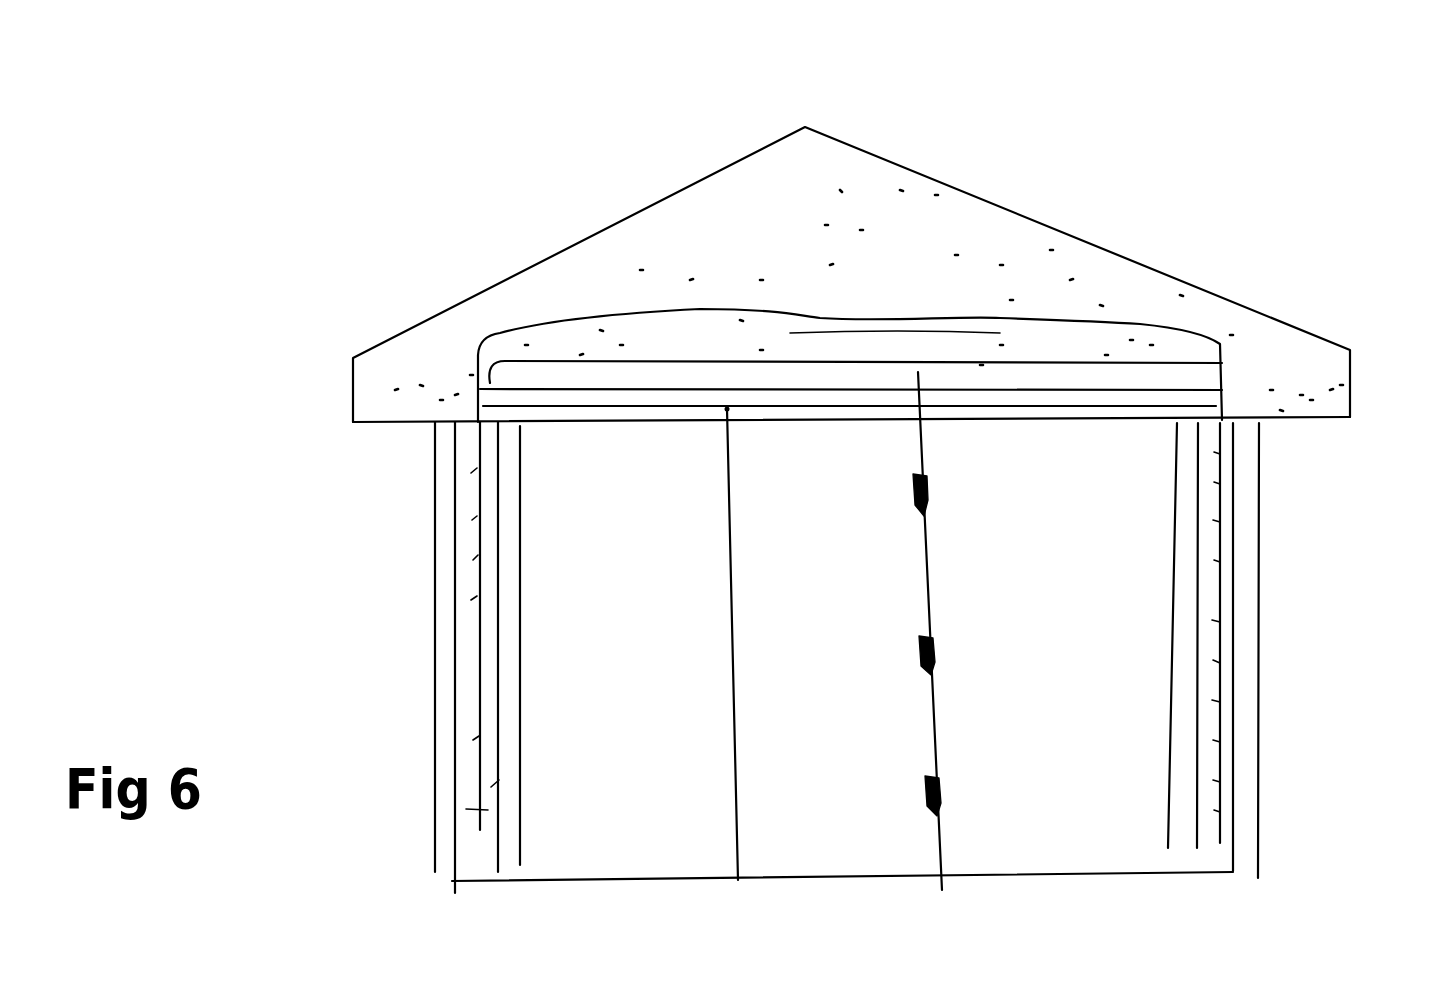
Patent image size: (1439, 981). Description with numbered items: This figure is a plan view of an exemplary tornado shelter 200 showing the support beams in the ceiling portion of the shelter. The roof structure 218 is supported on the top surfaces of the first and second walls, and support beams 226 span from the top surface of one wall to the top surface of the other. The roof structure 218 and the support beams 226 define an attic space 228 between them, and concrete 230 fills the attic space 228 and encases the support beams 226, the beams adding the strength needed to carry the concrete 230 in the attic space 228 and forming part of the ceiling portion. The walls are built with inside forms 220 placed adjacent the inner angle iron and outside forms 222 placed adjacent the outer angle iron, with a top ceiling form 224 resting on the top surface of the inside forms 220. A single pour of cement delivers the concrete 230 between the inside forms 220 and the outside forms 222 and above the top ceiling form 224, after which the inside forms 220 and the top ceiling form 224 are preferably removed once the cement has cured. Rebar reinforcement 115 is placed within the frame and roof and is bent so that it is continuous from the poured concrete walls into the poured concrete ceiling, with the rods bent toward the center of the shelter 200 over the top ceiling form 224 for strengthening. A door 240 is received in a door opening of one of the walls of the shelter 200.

The tornado shelter 200 is at (1275, 128).
The roof structure 218 is at (932, 176).
The inside forms 220 is at (518, 583).
The outside forms 222 is at (431, 576).
The top ceiling form 224 is at (762, 397).
The support beams 226 is at (653, 374).
The attic space 228 is at (1007, 287).
The concrete 230 is at (1000, 246).
The door 240 is at (855, 738).
The rebar reinforcement 115 is at (480, 712).